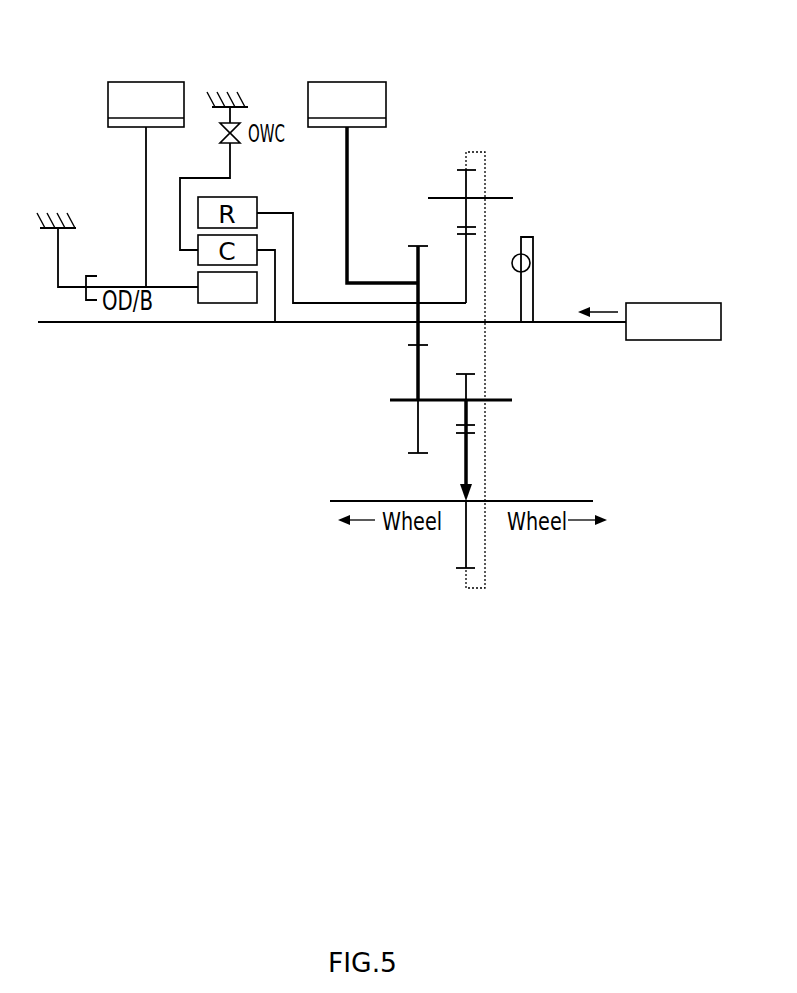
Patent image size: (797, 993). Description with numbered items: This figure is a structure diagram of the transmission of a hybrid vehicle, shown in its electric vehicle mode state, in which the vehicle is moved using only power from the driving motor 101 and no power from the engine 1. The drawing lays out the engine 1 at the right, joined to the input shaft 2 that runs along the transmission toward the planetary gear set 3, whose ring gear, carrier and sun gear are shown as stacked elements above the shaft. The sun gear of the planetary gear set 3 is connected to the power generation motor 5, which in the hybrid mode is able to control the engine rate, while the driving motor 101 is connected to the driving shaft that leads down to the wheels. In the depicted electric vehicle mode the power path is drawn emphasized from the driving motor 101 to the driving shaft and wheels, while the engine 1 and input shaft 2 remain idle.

The engine 1 is at (672, 303).
The input shaft 2 is at (305, 322).
The planetary gear set 3 is at (227, 303).
The power generation motor 5 is at (146, 82).
The driving motor 101 is at (347, 82).